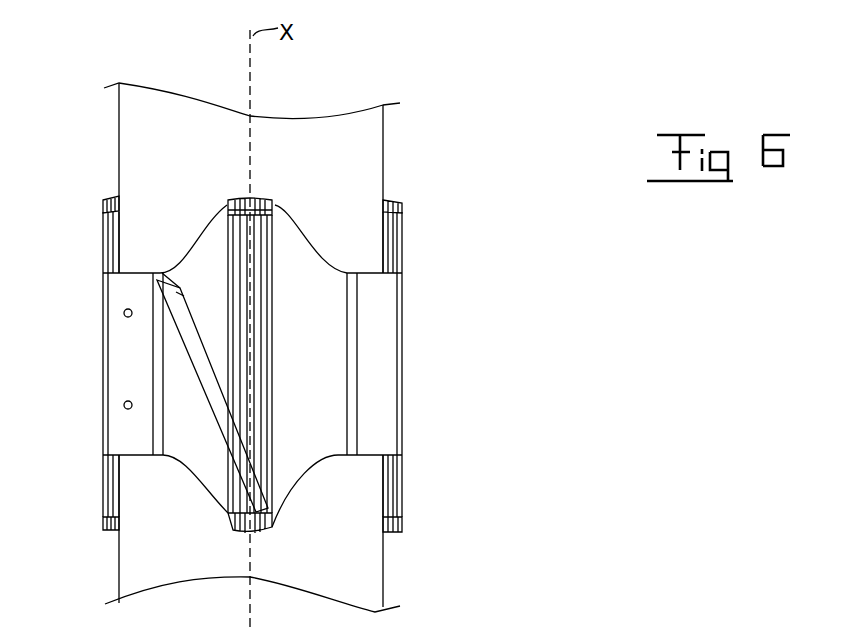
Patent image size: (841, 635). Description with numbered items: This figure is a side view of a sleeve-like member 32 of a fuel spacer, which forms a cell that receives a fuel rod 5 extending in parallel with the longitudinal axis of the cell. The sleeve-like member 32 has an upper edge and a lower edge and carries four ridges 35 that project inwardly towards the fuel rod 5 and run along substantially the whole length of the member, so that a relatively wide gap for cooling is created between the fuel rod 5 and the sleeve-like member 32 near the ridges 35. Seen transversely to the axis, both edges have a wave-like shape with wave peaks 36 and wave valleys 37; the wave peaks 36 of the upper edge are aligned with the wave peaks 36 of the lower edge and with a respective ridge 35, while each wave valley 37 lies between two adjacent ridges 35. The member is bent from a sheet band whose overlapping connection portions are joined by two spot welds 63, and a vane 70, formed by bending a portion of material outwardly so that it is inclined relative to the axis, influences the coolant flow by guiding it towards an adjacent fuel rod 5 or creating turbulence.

The fuel rod 5 is at (370, 130).
The sleeve-like member 32 is at (96, 285).
The ridge 35 is at (107, 199).
The wave peak 36 is at (103, 206).
The wave valley 37 is at (135, 457).
The spot weld 63 is at (124, 402).
The vane 70 is at (215, 378).